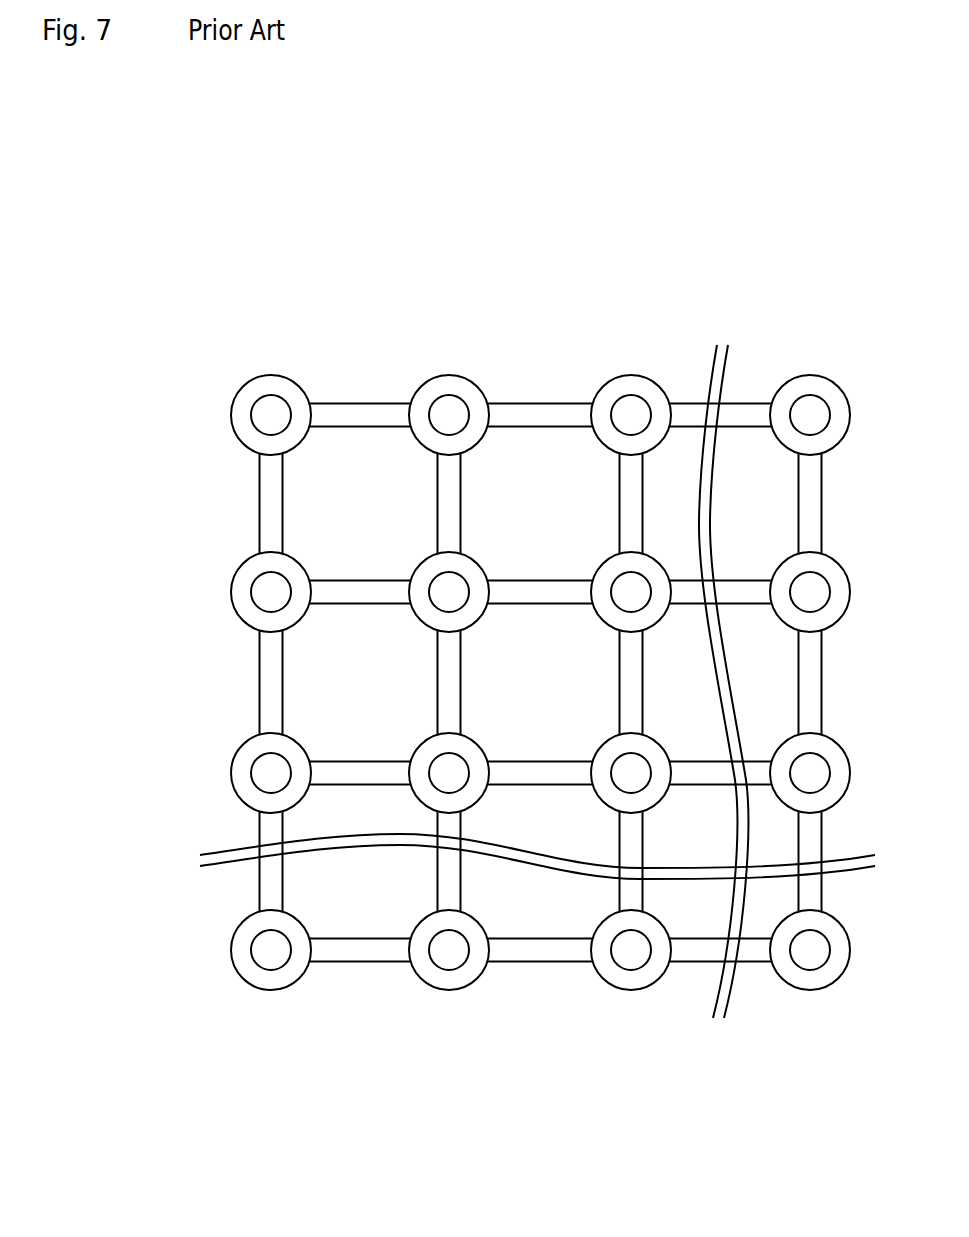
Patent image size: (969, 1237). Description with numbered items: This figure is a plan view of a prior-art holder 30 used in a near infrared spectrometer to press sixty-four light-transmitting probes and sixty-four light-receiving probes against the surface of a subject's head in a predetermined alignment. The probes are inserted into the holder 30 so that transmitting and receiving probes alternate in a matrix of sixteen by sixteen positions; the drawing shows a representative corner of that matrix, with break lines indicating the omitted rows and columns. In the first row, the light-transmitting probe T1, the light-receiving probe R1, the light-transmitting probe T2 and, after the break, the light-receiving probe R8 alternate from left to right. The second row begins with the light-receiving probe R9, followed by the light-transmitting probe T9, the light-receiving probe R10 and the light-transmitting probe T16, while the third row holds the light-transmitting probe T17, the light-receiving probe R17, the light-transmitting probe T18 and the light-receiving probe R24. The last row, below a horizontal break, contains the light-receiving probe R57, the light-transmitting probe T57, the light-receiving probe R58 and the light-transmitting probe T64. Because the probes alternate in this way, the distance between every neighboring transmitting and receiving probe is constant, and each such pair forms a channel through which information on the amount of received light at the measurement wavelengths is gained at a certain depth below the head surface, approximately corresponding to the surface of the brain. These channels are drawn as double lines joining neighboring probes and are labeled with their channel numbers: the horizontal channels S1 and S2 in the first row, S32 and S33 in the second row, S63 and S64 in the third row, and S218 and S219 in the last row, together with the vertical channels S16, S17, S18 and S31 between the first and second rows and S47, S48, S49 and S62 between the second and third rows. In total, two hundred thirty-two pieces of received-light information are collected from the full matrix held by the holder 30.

The holder 30 is at (536, 293).
The light-transmitting probe T1 is at (271, 415).
The light-receiving probe R1 is at (449, 415).
The light-transmitting probe T2 is at (631, 415).
The light-receiving probe R8 is at (810, 415).
The light-receiving probe R9 is at (271, 592).
The light-transmitting probe T9 is at (449, 592).
The light-receiving probe R10 is at (631, 592).
The light-transmitting probe T16 is at (810, 592).
The light-transmitting probe T17 is at (271, 773).
The light-receiving probe R17 is at (449, 773).
The light-transmitting probe T18 is at (631, 773).
The light-receiving probe R24 is at (810, 773).
The light-receiving probe R57 is at (271, 950).
The light-transmitting probe T57 is at (449, 950).
The light-receiving probe R58 is at (631, 950).
The light-transmitting probe T64 is at (810, 950).
The received-light information channel S1 is at (360, 416).
The received-light information channel S2 is at (540, 416).
The received-light information channel S16 is at (271, 503).
The received-light information channel S17 is at (449, 503).
The received-light information channel S18 is at (631, 503).
The received-light information channel S31 is at (810, 503).
The received-light information channel S32 is at (360, 593).
The received-light information channel S33 is at (540, 593).
The received-light information channel S47 is at (271, 682).
The received-light information channel S48 is at (449, 682).
The received-light information channel S49 is at (631, 682).
The received-light information channel S62 is at (810, 682).
The received-light information channel S63 is at (360, 774).
The received-light information channel S64 is at (540, 774).
The received-light information channel S218 is at (360, 951).
The received-light information channel S219 is at (540, 951).